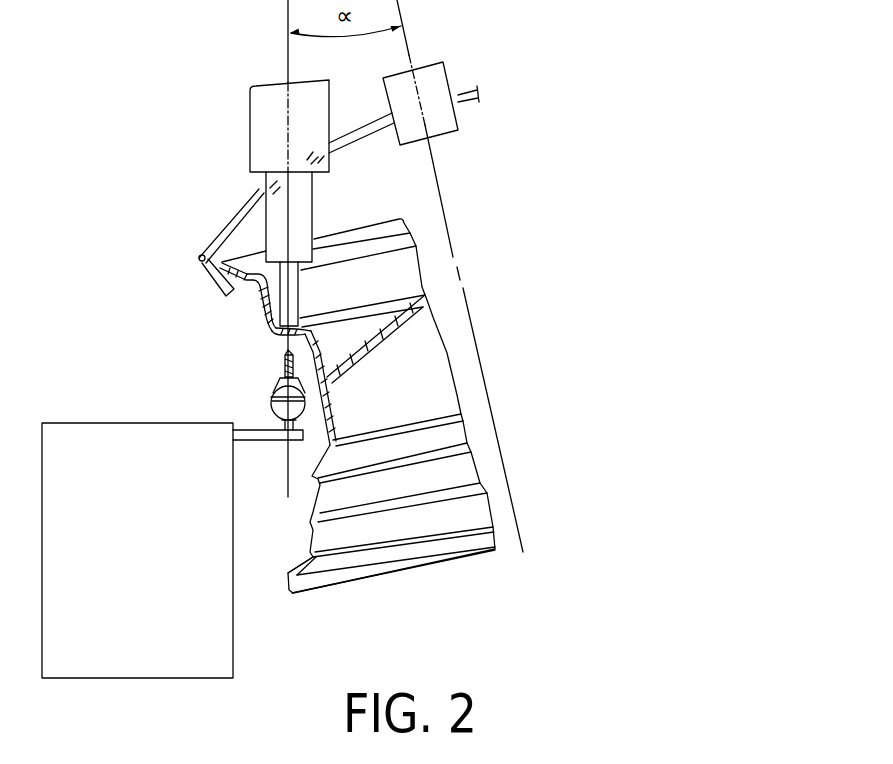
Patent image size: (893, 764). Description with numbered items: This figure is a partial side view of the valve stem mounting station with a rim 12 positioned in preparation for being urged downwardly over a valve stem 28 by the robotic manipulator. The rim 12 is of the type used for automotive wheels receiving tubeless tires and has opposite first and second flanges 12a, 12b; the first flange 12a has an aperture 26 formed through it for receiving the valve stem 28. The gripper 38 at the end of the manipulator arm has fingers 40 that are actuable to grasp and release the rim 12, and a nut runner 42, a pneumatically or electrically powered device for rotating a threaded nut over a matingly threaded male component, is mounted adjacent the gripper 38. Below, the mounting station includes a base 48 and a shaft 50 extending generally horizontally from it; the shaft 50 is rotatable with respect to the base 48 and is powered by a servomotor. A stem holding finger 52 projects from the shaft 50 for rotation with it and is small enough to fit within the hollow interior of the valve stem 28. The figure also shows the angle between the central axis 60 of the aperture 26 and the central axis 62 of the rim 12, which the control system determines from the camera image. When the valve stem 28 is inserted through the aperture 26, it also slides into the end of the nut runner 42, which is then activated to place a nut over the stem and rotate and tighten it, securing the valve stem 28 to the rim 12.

The rim 12 is at (400, 268).
The first flange 12a is at (262, 310).
The second flange 12b is at (318, 553).
The aperture 26 is at (283, 343).
The valve stem 28 is at (283, 373).
The gripper 38 is at (460, 80).
The fingers 40 is at (243, 215).
The nut runner 42 is at (260, 115).
The base 48 is at (152, 533).
The shaft 50 is at (262, 440).
The stem holding finger 52 is at (283, 430).
The central axis of the aperture 60 is at (288, 58).
The central axis of the rim 62 is at (407, 50).